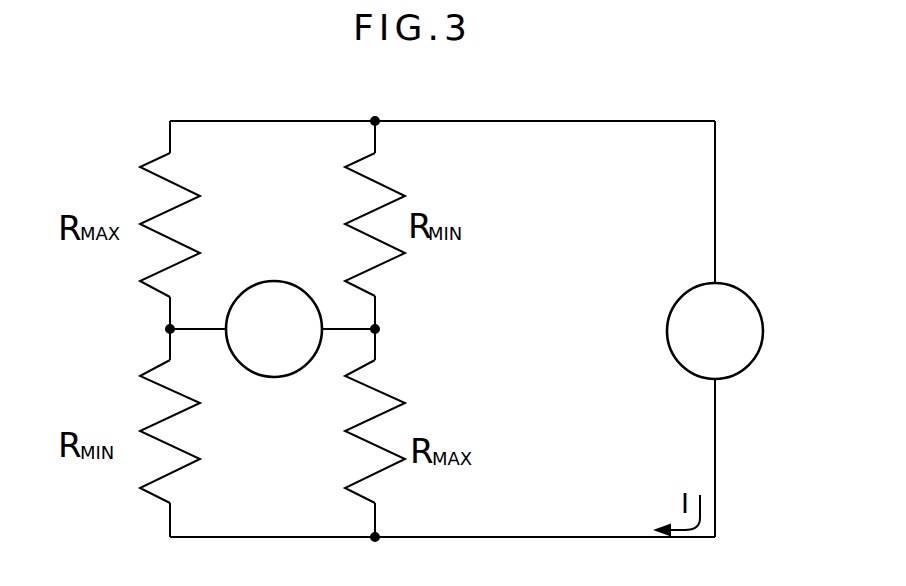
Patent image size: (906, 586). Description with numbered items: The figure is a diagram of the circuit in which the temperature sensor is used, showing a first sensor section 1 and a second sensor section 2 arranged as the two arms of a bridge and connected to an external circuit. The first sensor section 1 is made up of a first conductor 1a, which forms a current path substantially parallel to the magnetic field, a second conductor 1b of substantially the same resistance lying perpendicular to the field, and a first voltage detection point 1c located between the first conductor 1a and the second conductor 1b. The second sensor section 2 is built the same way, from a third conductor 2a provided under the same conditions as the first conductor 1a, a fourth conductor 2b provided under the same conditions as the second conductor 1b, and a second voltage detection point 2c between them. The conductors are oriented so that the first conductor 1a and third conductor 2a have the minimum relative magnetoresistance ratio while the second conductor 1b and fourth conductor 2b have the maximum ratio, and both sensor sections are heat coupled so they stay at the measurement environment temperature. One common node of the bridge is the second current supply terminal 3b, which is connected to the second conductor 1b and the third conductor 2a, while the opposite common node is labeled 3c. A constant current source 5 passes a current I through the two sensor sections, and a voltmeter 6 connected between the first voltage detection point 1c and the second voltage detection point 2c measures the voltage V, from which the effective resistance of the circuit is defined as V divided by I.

The first sensor section 1 is at (87, 279).
The first conductor 1a is at (140, 376).
The second conductor 1b is at (140, 281).
The first voltage detection point 1c is at (172, 331).
The second sensor section 2 is at (450, 280).
The third conductor 2a is at (400, 255).
The fourth conductor 2b is at (404, 403).
The second voltage detection point 2c is at (373, 326).
The second current supply terminal 3b is at (377, 119).
The lower common terminal of bridge 3c is at (377, 535).
The constant current source 5 is at (699, 283).
The voltmeter 6 is at (275, 280).